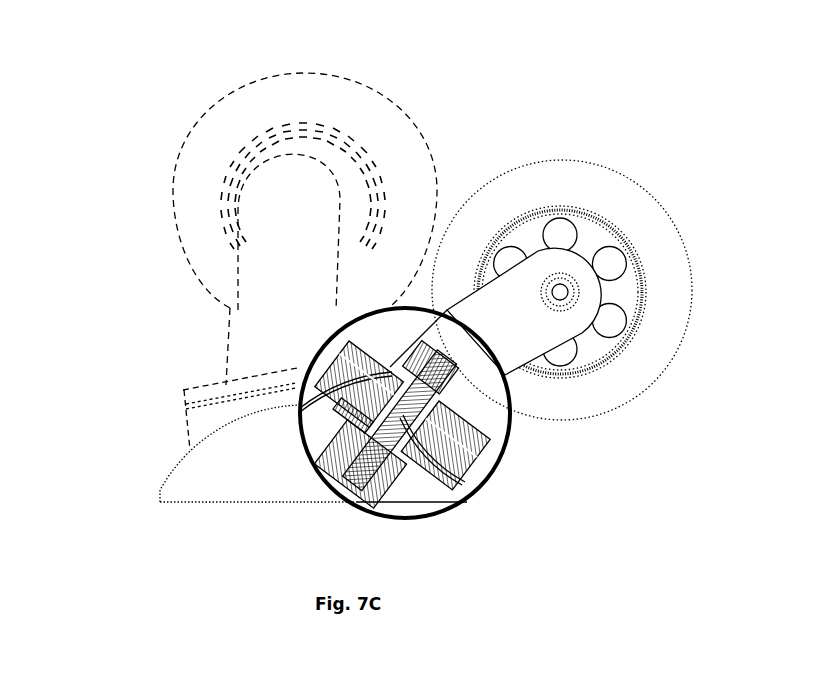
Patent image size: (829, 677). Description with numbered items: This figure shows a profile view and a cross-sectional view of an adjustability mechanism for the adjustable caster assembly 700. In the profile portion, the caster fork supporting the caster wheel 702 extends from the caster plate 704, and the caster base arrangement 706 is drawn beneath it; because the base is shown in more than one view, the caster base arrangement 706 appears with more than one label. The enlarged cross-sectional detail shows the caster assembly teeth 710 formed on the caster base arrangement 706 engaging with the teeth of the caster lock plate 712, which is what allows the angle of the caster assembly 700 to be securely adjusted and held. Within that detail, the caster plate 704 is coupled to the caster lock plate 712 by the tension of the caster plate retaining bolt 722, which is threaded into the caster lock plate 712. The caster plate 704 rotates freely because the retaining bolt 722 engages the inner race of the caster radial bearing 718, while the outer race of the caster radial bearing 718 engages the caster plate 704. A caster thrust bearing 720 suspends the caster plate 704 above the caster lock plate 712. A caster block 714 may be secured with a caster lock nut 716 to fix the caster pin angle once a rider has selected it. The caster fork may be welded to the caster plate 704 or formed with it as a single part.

The adjustable caster assembly 700 is at (373, 56).
The caster wheel 702 is at (408, 240).
The caster plate 704 is at (374, 375).
The caster base arrangement 706 is at (343, 490).
The caster assembly teeth 710 is at (218, 451).
The caster lock plate 712 is at (339, 456).
The caster block 714 is at (213, 475).
The caster lock nut 716 is at (222, 486).
The caster radial bearing 718 is at (507, 416).
The caster thrust bearing 720 is at (520, 481).
The caster plate retaining bolt 722 is at (472, 296).